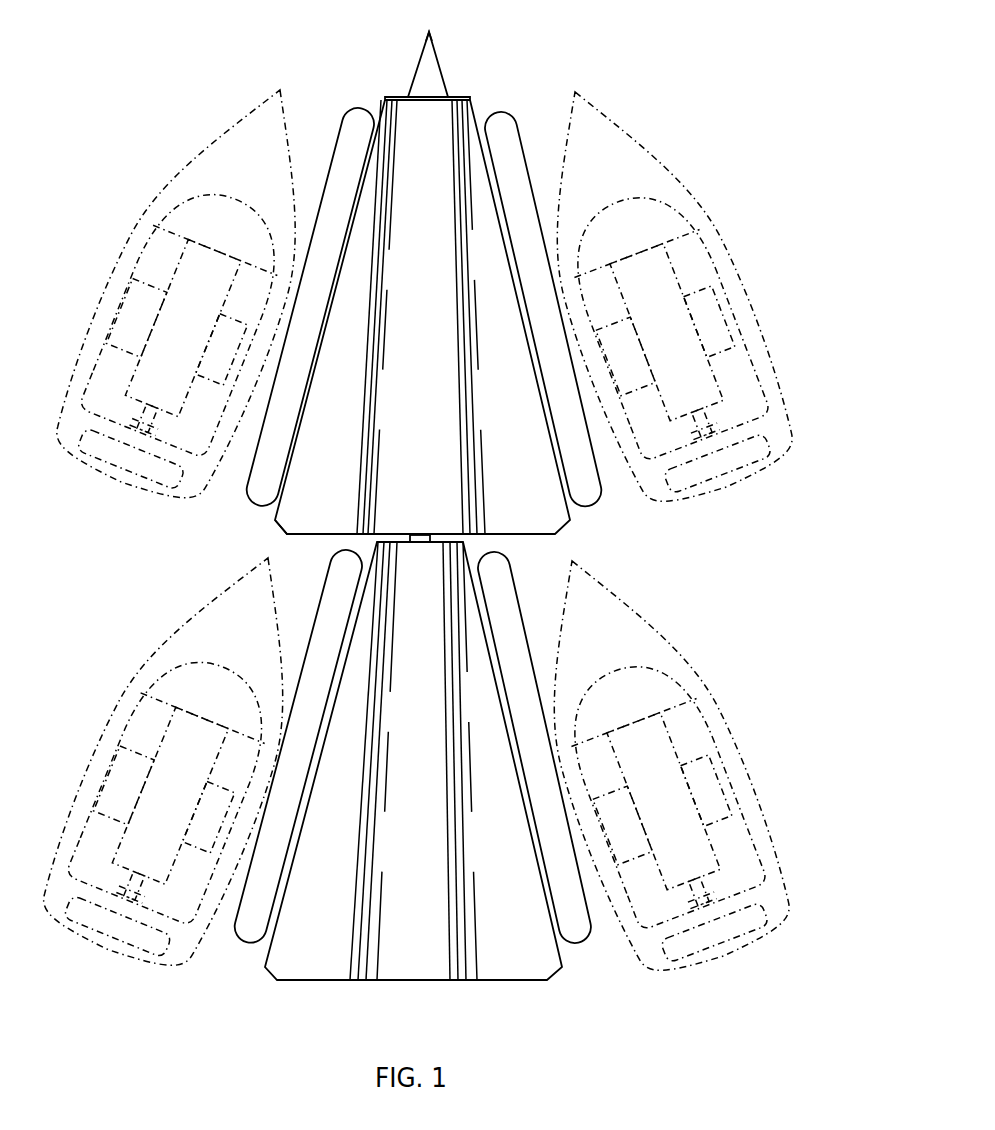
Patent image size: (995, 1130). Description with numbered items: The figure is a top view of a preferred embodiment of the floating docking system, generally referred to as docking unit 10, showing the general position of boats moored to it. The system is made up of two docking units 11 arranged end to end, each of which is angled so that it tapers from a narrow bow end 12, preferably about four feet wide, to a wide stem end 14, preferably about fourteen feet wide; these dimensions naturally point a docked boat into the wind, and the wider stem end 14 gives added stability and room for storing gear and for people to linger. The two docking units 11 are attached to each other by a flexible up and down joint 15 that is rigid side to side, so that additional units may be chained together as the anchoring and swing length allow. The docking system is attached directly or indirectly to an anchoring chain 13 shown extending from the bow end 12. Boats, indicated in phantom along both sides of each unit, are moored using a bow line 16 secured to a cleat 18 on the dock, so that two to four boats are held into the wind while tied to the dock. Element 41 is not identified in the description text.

The docking unit 10 is at (200, 93).
The docking unit 11 is at (373, 186).
The bow end 12 is at (385, 97).
The anchoring chain 13 is at (431, 33).
The triangular nose piece 41 is at (443, 72).
The stem end 14 is at (281, 525).
The flexible up and down joint 15 is at (420, 542).
The bow line 16 is at (465, 132).
The cleat 18 is at (598, 135).